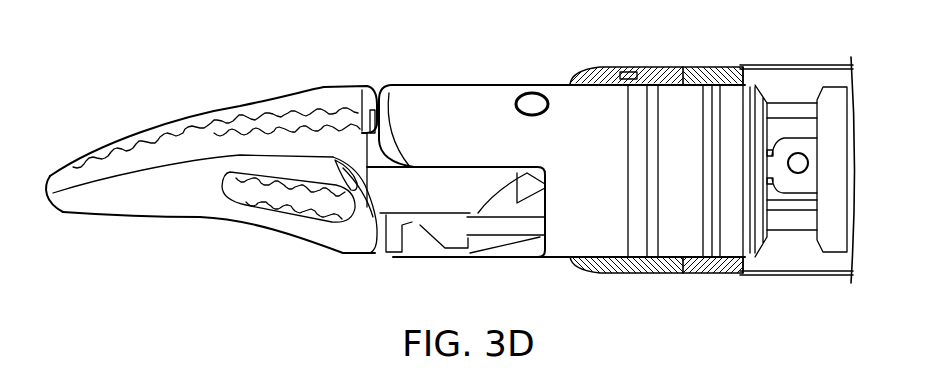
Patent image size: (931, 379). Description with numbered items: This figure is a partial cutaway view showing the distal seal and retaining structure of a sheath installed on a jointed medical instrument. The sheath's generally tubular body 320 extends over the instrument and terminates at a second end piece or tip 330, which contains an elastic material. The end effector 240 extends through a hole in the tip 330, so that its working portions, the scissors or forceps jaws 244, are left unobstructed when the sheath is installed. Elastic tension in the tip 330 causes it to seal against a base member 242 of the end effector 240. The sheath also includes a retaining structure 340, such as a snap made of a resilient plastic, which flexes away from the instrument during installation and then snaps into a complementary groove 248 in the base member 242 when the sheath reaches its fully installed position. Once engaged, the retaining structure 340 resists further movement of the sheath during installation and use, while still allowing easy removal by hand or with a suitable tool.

The end effector 240 is at (302, 52).
The base member 242 is at (486, 93).
The jaws 244 is at (215, 211).
The groove 248 is at (727, 241).
The tubular body 320 is at (790, 64).
The tip 330 is at (598, 68).
The retaining structure 340 is at (720, 67).